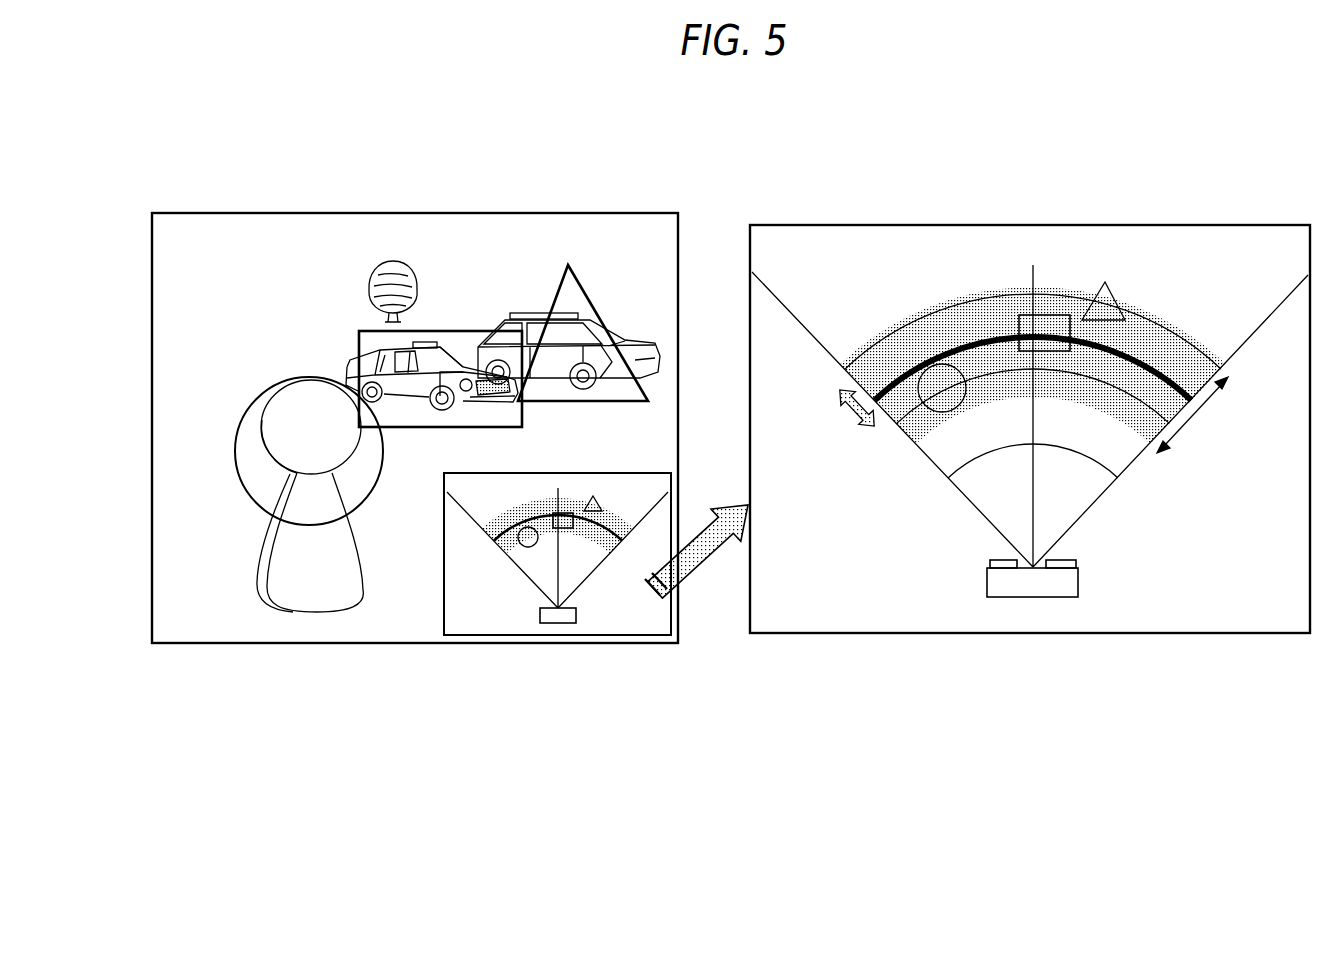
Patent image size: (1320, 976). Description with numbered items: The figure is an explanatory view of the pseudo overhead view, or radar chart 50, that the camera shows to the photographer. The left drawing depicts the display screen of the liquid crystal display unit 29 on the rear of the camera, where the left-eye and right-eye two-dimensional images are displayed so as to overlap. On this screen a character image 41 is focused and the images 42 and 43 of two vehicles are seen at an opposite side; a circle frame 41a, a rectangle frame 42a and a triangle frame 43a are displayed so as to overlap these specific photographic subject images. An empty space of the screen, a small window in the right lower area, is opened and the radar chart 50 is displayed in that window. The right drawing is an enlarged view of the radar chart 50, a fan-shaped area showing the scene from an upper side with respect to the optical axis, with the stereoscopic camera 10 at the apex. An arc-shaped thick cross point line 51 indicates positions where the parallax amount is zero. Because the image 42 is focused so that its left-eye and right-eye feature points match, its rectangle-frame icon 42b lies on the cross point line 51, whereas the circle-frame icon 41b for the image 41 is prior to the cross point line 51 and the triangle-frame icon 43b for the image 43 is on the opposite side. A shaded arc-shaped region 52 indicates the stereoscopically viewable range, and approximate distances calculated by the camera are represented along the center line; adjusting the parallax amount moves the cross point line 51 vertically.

The liquid crystal display unit 29 is at (253, 213).
The character image 41 is at (360, 527).
The circle frame 41a is at (248, 500).
The vehicle image 42 is at (463, 403).
The rectangle frame 42a is at (356, 336).
The vehicle image 43 is at (630, 340).
The triangle frame 43a is at (556, 283).
The radar chart 50 is at (560, 473).
The cross point line 51 is at (1157, 363).
The shaded arc-shaped region 52 is at (968, 313).
The circle frame icon 41b is at (935, 353).
The rectangle frame icon 42b is at (1017, 320).
The triangle frame icon 43b is at (1093, 297).
The stereoscopic camera 10 is at (577, 611).